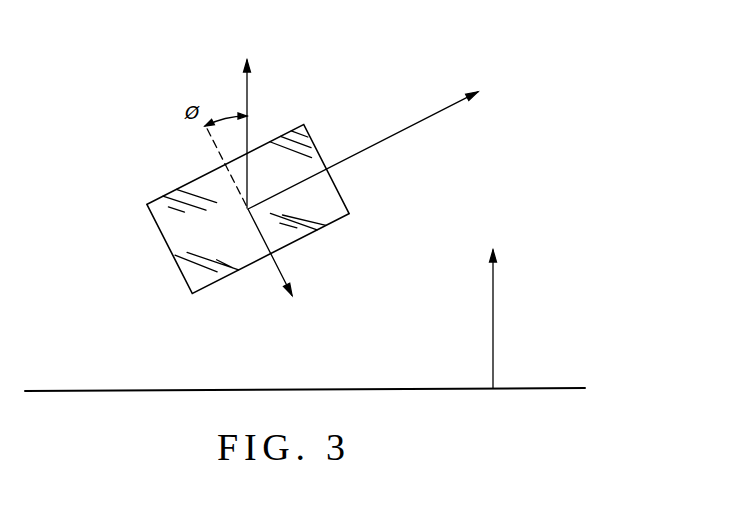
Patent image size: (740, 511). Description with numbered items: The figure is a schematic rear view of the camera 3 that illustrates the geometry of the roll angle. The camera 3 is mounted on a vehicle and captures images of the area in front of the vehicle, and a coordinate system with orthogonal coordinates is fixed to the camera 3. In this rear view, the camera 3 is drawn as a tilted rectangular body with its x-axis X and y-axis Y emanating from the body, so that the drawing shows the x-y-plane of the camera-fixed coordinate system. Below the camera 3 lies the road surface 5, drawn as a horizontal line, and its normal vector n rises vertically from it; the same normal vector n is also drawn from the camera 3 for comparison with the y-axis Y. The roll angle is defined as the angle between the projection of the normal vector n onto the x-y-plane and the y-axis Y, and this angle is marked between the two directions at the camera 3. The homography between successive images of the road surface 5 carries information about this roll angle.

The camera 3 is at (160, 235).
The road surface 5 is at (533, 388).
The normal vector n is at (374, 207).
The x-axis X is at (372, 145).
The y-axis Y is at (250, 223).